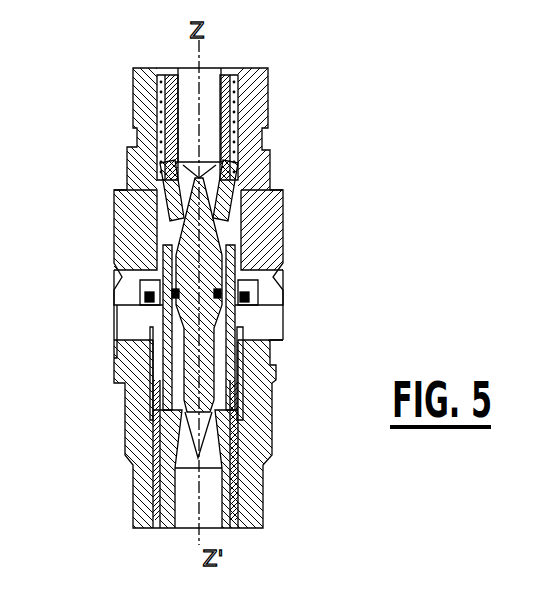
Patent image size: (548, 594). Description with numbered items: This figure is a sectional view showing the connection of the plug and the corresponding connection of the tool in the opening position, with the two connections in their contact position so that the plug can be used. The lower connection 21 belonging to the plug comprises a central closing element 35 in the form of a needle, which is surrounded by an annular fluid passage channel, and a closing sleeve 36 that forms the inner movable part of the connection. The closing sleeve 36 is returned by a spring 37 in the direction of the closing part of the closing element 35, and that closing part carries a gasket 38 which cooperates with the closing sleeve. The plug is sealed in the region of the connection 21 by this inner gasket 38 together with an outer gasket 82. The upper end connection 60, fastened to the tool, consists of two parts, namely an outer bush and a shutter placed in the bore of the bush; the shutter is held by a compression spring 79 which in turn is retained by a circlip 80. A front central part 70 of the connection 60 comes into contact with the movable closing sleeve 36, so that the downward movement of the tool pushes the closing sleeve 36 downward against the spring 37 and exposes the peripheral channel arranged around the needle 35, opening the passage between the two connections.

The connection 21 is at (117, 314).
The closing element 35 is at (224, 268).
The closing sleeve 36 is at (270, 393).
The spring 37 is at (240, 449).
The gasket 38 is at (244, 290).
The end connection 60 is at (280, 192).
The front central part 70 is at (232, 342).
The compression spring 79 is at (270, 113).
The circlip 80 is at (234, 67).
The outer gasket 82 is at (143, 287).